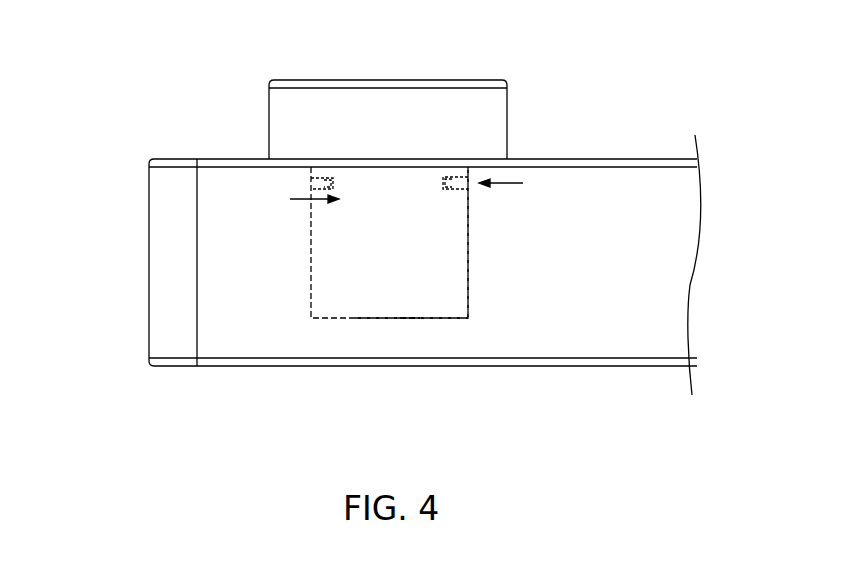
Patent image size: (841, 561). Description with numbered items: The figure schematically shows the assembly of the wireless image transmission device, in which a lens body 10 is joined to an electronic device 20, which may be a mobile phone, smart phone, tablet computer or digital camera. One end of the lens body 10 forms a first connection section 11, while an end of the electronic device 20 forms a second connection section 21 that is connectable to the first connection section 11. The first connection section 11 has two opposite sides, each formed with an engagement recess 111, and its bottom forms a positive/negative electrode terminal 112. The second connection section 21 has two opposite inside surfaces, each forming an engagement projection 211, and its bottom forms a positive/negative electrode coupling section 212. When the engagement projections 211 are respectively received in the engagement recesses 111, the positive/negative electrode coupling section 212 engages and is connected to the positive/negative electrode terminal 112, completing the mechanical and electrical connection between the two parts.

The lens body 10 is at (285, 116).
The electronic device 20 is at (677, 187).
The second connection section 21 is at (48, 193).
The engagement projection 211 is at (311, 181).
The positive/negative electrode coupling section 212 is at (355, 318).
The first connection section 11 is at (758, 192).
The engagement recess 111 is at (445, 190).
The positive/negative electrode terminal 112 is at (415, 318).